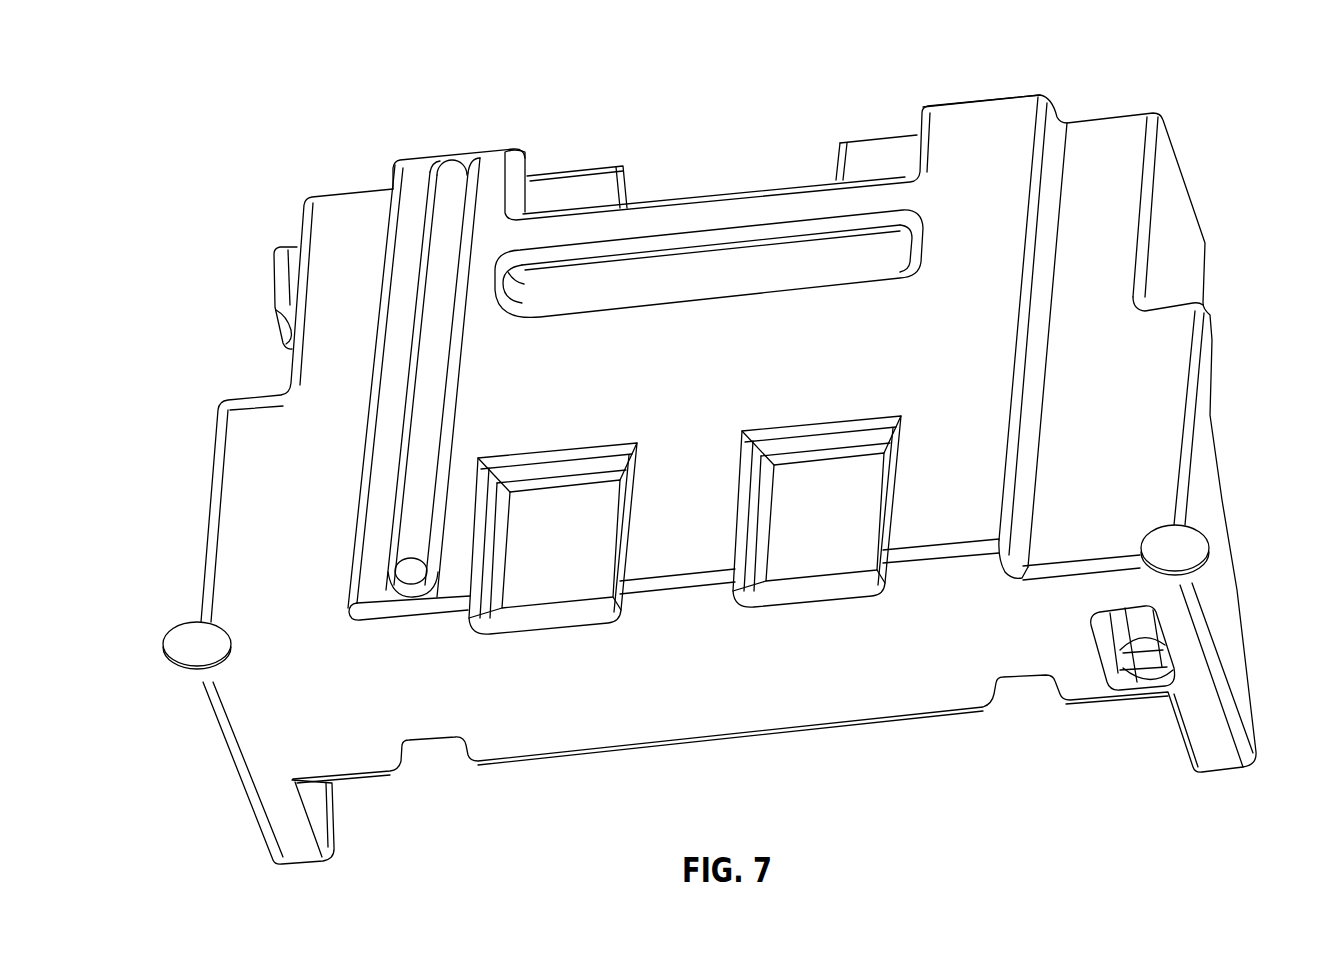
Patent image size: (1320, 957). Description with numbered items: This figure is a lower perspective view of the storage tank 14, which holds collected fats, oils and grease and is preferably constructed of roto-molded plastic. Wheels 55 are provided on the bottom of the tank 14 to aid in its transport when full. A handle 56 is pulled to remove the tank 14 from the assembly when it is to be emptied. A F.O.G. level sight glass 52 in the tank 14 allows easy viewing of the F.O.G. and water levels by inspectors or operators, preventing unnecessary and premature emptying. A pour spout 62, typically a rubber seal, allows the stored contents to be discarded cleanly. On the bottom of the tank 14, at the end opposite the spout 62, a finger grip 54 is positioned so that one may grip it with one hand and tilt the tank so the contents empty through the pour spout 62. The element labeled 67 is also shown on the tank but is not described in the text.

The storage tank 14 is at (733, 389).
The F.O.G. level sight glass 52 is at (427, 407).
The finger grip 54 is at (1132, 625).
The wheels 55 is at (187, 643).
The handle 56 is at (683, 245).
The pour spout 62 is at (293, 247).
The upper tab 67 is at (973, 135).